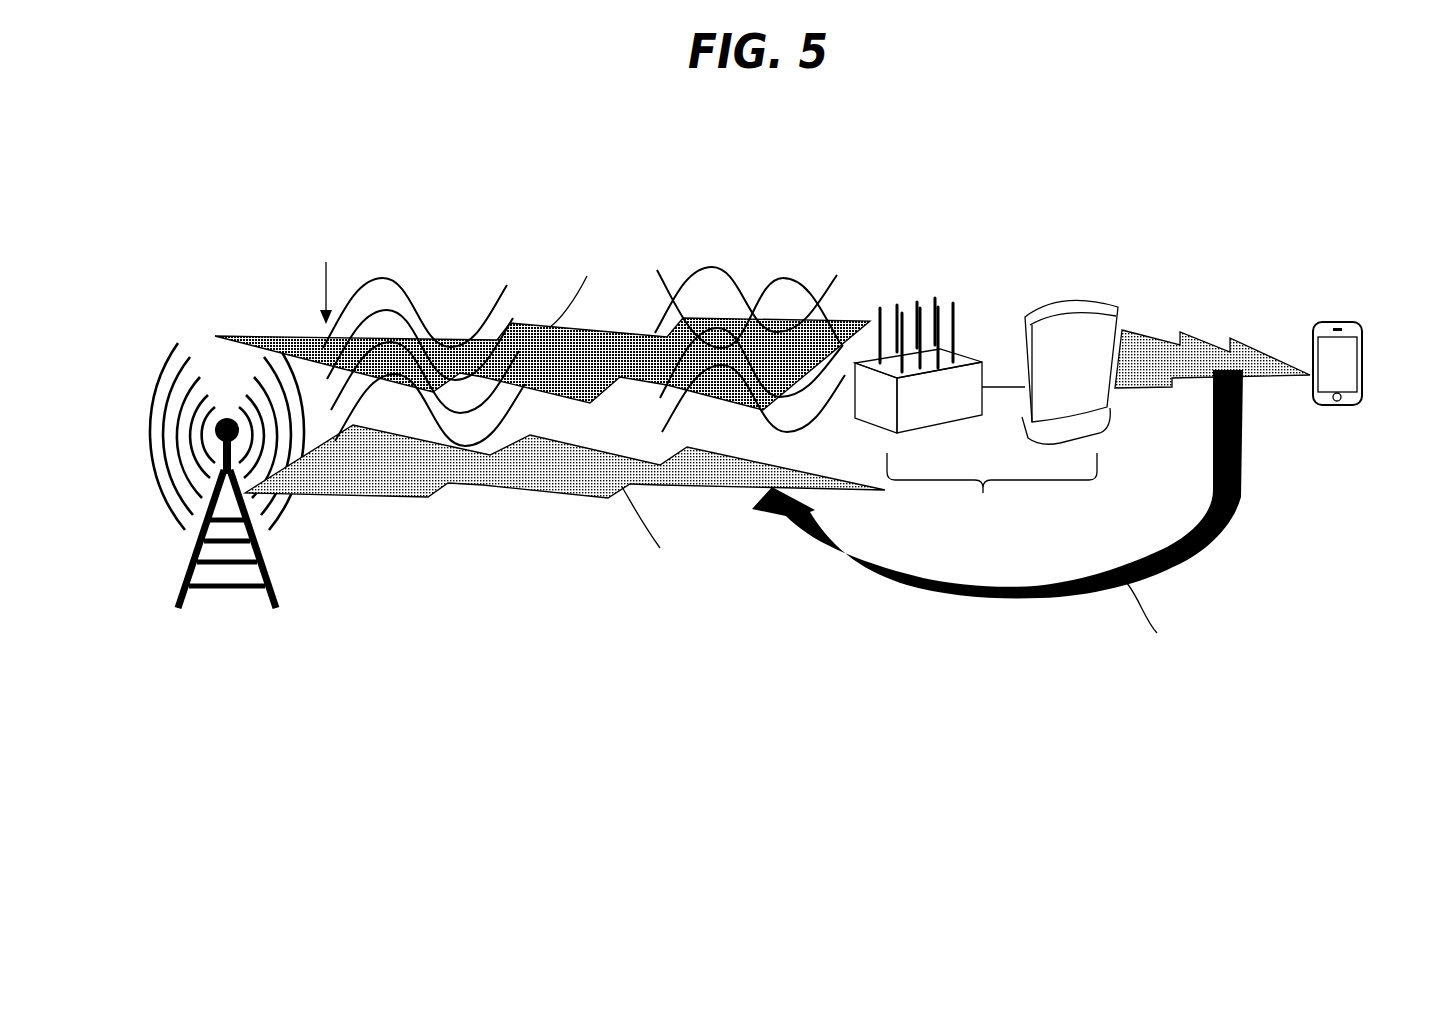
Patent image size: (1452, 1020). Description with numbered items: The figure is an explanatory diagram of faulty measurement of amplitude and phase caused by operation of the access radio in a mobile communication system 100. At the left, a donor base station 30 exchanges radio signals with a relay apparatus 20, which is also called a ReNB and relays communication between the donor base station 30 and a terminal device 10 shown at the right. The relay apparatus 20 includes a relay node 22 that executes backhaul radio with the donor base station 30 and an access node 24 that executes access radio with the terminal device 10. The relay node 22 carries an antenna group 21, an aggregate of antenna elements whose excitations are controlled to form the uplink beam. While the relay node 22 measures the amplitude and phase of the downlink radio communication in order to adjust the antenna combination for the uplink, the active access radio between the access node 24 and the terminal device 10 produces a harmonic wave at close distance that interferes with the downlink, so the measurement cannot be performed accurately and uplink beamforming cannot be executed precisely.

The terminal device 10 is at (1363, 345).
The relay apparatus 20 is at (1011, 392).
The antenna group 21 is at (877, 320).
The relay node 22 is at (932, 412).
The access node 24 is at (1122, 322).
The donor base station 30 is at (250, 501).
The mobile communication system 100 is at (634, 695).